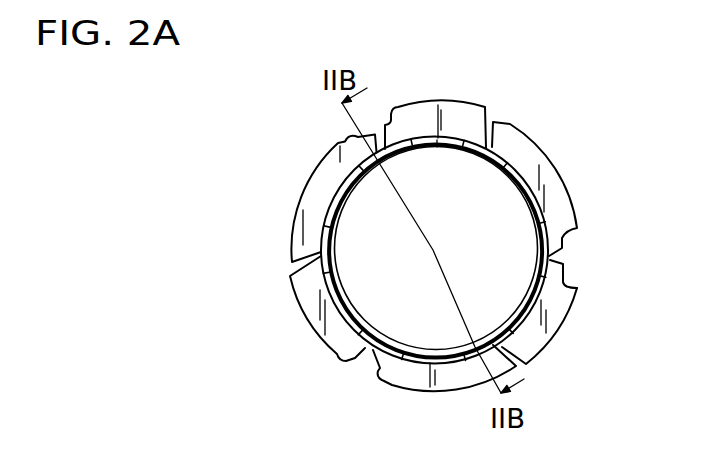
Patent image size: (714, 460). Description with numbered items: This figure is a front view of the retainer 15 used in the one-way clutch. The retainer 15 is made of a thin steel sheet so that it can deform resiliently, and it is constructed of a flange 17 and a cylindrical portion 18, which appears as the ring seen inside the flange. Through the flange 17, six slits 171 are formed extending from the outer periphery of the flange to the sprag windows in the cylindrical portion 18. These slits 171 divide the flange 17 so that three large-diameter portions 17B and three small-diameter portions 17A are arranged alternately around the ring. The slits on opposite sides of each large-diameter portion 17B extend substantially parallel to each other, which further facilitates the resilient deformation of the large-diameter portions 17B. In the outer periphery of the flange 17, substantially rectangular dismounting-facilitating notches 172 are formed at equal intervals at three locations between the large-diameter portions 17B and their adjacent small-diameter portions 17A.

The retainer 15 is at (278, 157).
The flange 17 is at (558, 164).
The small-diameter portion 17A is at (405, 372).
The large-diameter portion 17B is at (313, 305).
The cylindrical portion 18 is at (523, 313).
The slit 171 is at (493, 121).
The dismounting-facilitating notch 172 is at (568, 257).